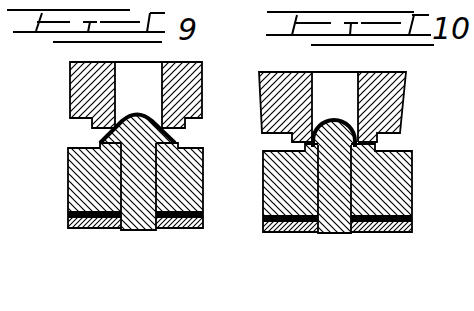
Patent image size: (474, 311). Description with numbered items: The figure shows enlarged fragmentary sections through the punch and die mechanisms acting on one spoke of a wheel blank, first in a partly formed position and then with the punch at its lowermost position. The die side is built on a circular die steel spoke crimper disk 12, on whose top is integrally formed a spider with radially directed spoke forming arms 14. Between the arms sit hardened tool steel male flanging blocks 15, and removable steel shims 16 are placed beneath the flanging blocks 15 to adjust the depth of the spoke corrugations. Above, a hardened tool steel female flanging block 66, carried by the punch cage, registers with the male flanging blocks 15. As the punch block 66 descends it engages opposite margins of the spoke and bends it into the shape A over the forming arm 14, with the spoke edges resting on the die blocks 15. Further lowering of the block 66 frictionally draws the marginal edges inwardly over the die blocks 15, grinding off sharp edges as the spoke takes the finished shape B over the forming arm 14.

In FIG. 9, the female flanging block 66 is at (85, 88).
In FIG. 10, the female flanging block 66 is at (226, 88).
In FIG. 9, the spoke forming arm 14 is at (147, 180).
In FIG. 10, the spoke forming arm 14 is at (337, 172).
In FIG. 9, the male flanging block 15 is at (80, 185).
In FIG. 10, the male flanging block 15 is at (243, 208).
In FIG. 9, the removable steel shim 16 is at (103, 214).
In FIG. 10, the removable steel shim 16 is at (288, 223).
In FIG. 9, the spoke crimper disk 12 is at (84, 228).
In FIG. 10, the spoke crimper disk 12 is at (413, 228).
In FIG. 9, the partly formed spoke shape A is at (141, 113).
In FIG. 10, the finished spoke shape B is at (341, 118).